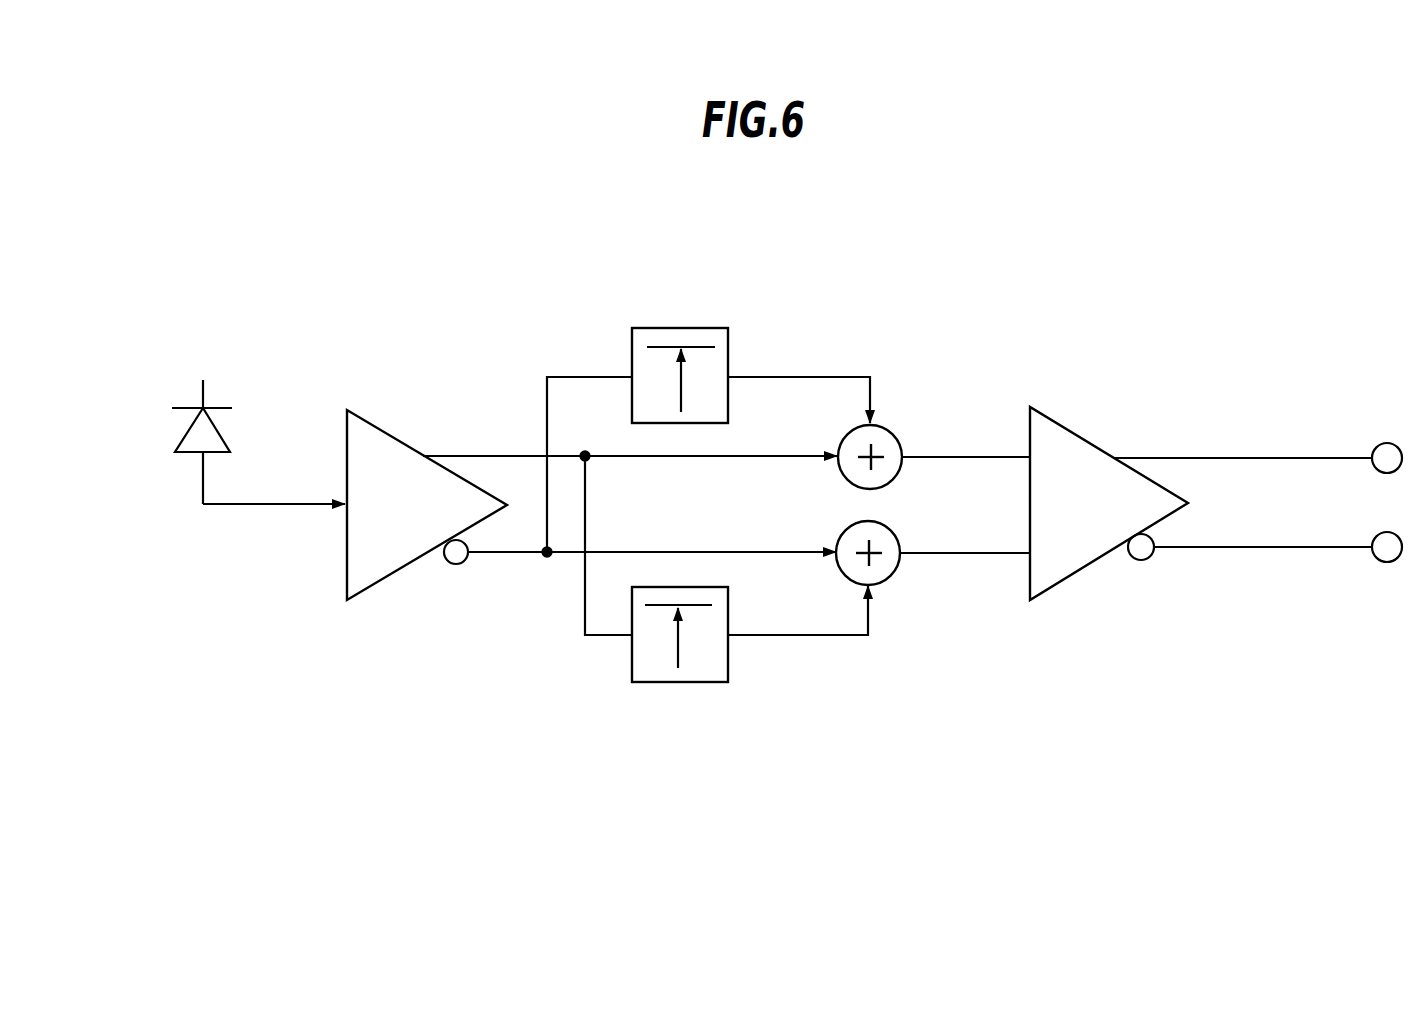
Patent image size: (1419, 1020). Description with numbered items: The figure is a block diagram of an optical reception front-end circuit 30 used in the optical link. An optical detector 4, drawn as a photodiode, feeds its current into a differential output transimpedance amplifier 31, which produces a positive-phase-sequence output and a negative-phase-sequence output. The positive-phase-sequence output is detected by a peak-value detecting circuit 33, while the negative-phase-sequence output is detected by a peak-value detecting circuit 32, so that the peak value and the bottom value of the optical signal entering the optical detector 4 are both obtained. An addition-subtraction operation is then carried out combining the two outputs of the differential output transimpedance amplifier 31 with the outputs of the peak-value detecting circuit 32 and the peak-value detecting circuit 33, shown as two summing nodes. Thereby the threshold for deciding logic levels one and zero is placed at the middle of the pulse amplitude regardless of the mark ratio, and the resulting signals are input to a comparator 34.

The optical detector 4 is at (185, 455).
The optical reception front-end circuit 30 is at (438, 688).
The differential output transimpedance amplifier 31 is at (365, 412).
The peak-value detecting circuit 32 is at (692, 328).
The peak-value detecting circuit 33 is at (690, 682).
The comparator 34 is at (1080, 435).